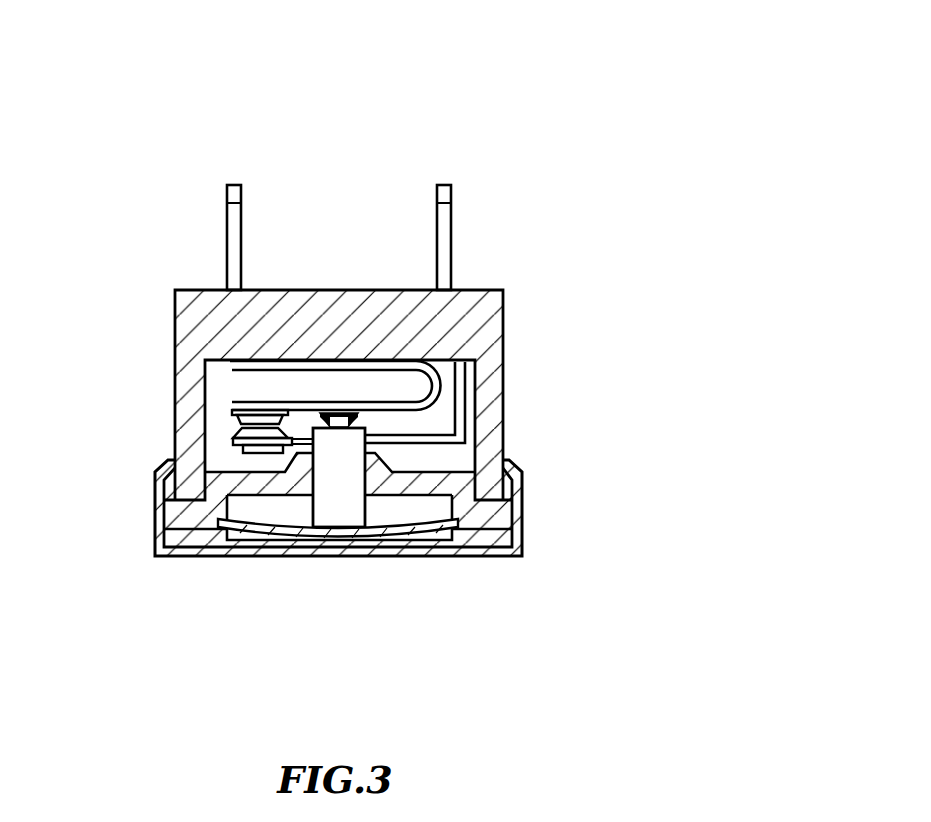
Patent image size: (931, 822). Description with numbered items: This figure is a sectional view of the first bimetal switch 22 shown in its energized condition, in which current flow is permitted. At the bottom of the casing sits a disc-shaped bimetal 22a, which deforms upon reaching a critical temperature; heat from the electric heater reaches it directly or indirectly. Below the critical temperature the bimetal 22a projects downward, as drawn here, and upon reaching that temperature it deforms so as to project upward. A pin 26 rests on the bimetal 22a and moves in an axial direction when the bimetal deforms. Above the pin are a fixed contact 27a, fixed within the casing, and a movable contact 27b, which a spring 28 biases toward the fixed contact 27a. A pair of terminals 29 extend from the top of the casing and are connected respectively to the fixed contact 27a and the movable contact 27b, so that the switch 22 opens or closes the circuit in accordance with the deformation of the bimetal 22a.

The bimetal switch 22 is at (547, 107).
The disc-shaped bimetal 22a is at (426, 520).
The pin 26 is at (334, 510).
The fixed contact 27a is at (236, 429).
The movable contact 27b is at (236, 416).
The spring 28 is at (446, 382).
The terminals 29 is at (234, 183).